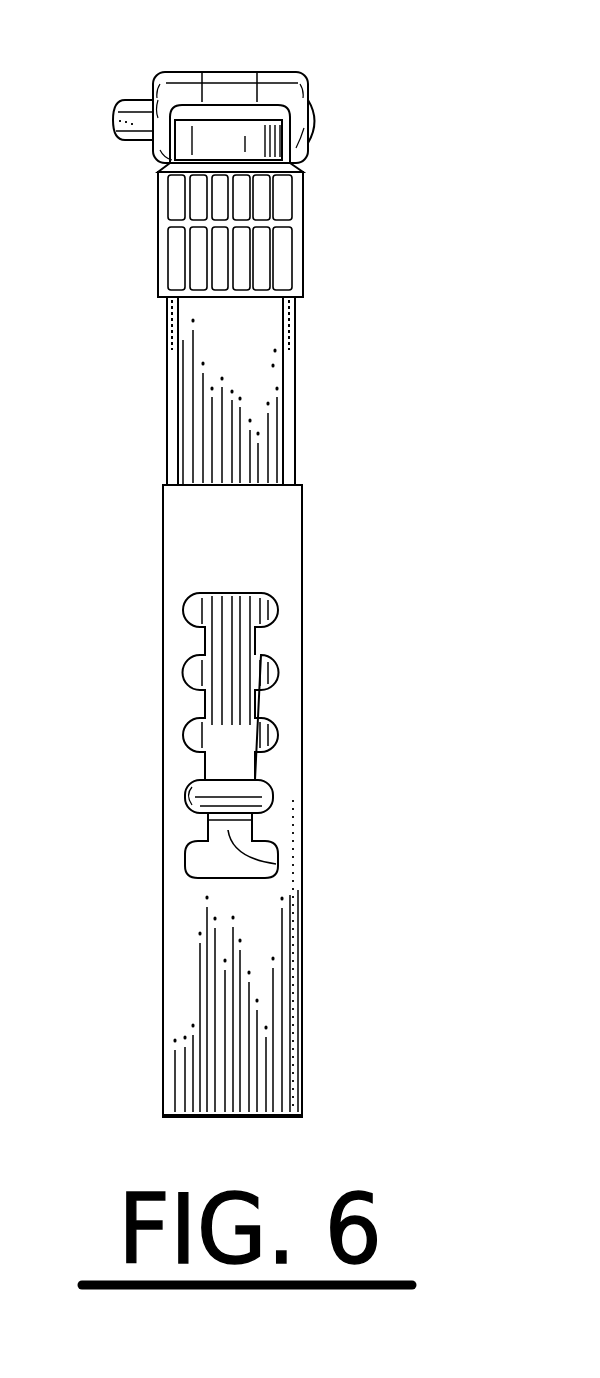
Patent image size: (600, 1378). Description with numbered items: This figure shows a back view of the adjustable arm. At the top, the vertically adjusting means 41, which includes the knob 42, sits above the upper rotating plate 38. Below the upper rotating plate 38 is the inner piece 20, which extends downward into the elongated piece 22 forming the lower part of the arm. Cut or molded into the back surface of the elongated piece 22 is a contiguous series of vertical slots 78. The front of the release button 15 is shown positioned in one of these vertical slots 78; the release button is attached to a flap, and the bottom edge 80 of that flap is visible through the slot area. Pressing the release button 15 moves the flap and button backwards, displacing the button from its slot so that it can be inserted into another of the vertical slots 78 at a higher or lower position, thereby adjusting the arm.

The vertically adjusting means 41 is at (308, 82).
The upper rotating plate 38 is at (303, 148).
The knob 42 is at (143, 98).
The inner piece 20 is at (218, 350).
The elongated piece 22 is at (175, 995).
The vertical slots 78 is at (278, 730).
The release button 15 is at (187, 797).
The bottom edge 80 is at (252, 873).